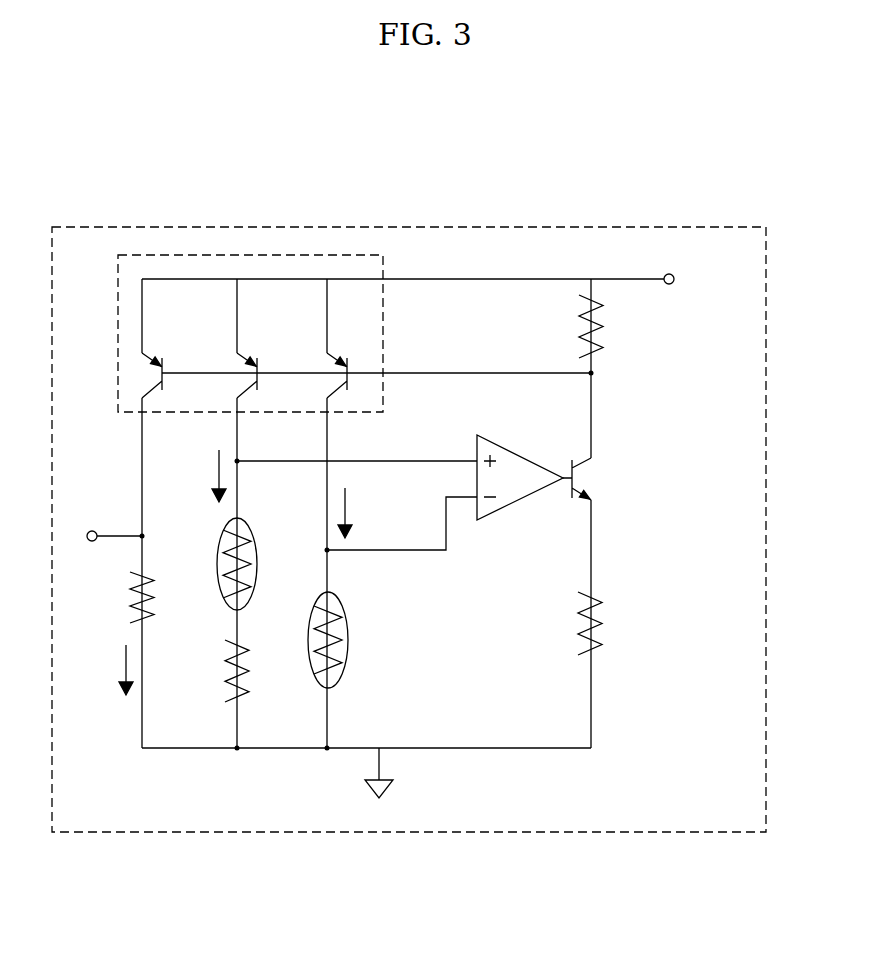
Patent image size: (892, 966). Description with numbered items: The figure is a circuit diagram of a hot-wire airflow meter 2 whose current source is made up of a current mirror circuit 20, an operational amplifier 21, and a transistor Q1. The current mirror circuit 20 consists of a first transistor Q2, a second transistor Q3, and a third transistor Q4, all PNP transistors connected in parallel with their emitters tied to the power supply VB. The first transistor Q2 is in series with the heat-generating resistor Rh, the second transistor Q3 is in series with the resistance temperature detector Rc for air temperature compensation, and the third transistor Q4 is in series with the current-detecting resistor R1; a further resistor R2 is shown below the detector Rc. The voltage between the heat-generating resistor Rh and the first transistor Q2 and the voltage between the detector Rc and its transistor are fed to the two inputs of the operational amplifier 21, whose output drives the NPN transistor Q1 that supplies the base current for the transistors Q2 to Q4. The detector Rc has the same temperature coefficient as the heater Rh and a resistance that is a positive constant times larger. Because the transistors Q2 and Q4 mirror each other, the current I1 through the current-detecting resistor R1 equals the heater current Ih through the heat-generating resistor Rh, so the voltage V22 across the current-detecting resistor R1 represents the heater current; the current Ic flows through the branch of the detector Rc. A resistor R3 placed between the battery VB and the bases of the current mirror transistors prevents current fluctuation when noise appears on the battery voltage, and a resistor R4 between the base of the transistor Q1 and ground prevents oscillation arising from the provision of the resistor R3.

The airflow meter 2 is at (766, 328).
The current mirror circuit 20 is at (283, 255).
The operational amplifier 21 is at (510, 503).
The transistor Q1 is at (596, 479).
The first transistor Q2 is at (349, 362).
The second transistor Q3 is at (259, 362).
The third transistor Q4 is at (164, 362).
The current-detecting resistor R1 is at (153, 640).
The resistor R2 is at (248, 690).
The resistor R3 is at (604, 343).
The resistor R4 is at (602, 622).
The resistance temperature detector Rc is at (257, 566).
The heat-generating resistor Rh is at (350, 640).
The power supply VB is at (687, 279).
The voltage V22 is at (106, 521).
The current Ic is at (210, 476).
The current Ih is at (354, 513).
The current I1 is at (116, 670).